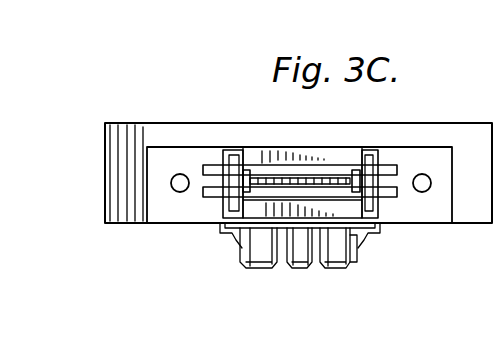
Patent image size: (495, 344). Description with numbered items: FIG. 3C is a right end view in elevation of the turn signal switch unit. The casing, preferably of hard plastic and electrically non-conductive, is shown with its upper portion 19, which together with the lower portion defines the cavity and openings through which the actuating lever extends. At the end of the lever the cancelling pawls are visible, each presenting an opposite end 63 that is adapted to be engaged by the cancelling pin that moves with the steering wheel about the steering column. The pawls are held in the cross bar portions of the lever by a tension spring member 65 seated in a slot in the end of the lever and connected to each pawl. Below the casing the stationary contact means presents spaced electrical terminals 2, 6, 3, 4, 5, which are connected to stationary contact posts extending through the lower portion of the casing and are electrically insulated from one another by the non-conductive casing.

The upper portion 19 is at (162, 122).
The opposite end 63 is at (246, 170).
The tension spring member 65 is at (283, 178).
The terminal 2 is at (270, 266).
The terminal 6 is at (303, 262).
The terminal 3 is at (340, 264).
The terminal 4 is at (246, 248).
The terminal 5 is at (358, 248).